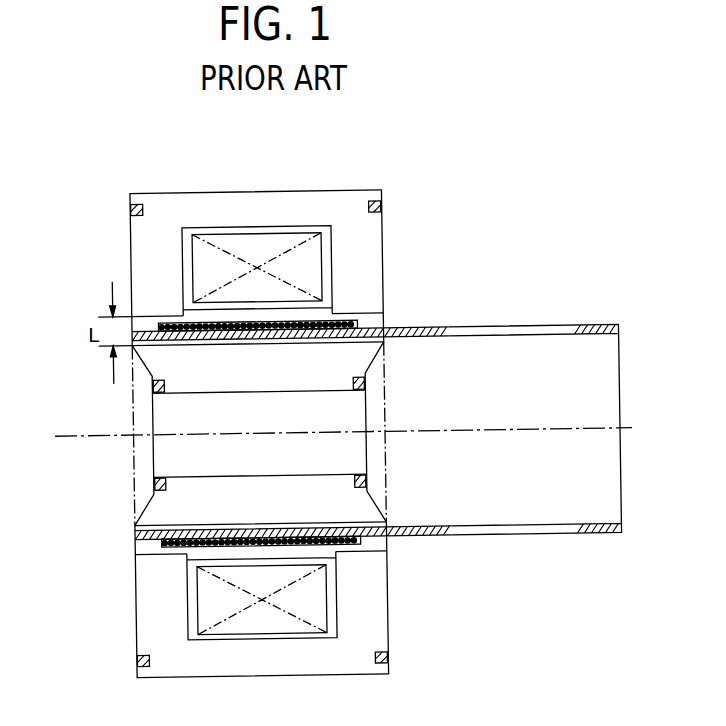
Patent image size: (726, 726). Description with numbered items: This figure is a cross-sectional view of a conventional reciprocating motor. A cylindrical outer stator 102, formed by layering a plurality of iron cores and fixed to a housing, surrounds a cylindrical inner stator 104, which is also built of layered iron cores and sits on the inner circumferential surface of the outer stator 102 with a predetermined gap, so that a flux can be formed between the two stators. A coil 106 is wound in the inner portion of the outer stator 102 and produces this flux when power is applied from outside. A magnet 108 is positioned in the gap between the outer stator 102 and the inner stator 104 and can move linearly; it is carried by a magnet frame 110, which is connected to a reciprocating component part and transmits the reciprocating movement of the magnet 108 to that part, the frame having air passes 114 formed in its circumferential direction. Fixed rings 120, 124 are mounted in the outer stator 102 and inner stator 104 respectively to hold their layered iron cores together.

The outer stator 102 is at (229, 204).
The inner stator 104 is at (173, 364).
The coil 106 is at (308, 258).
The magnet 108 is at (348, 317).
The magnet frame 110 is at (370, 328).
The air pass 114 is at (543, 326).
The fixed ring 120 is at (381, 206).
The fixed ring 124 is at (391, 655).